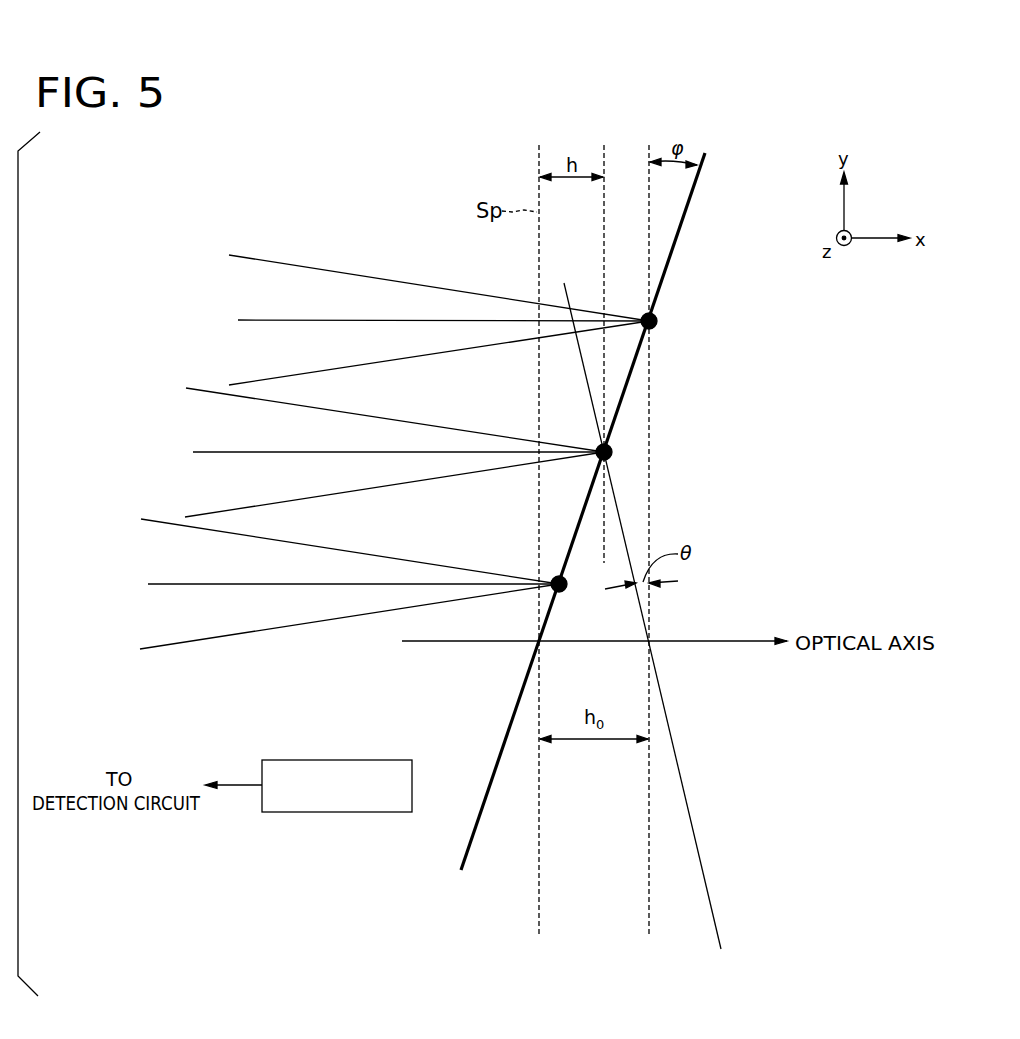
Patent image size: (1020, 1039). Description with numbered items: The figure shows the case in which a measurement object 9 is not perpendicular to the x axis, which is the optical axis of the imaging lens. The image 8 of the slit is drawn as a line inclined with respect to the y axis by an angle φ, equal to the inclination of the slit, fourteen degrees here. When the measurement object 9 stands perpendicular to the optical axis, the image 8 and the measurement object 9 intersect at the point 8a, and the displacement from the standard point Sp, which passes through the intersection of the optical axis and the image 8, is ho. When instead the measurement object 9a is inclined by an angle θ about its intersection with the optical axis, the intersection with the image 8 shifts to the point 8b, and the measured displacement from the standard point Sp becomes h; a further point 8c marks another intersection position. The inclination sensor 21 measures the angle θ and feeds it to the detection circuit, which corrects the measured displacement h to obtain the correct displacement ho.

The image 8 is at (689, 215).
The point 8a is at (657, 322).
The point 8b is at (612, 452).
The beam convergence point 8c is at (554, 578).
The measurement object 9 is at (649, 810).
The measurement object 9a is at (704, 877).
The inclination sensor 21 is at (352, 760).